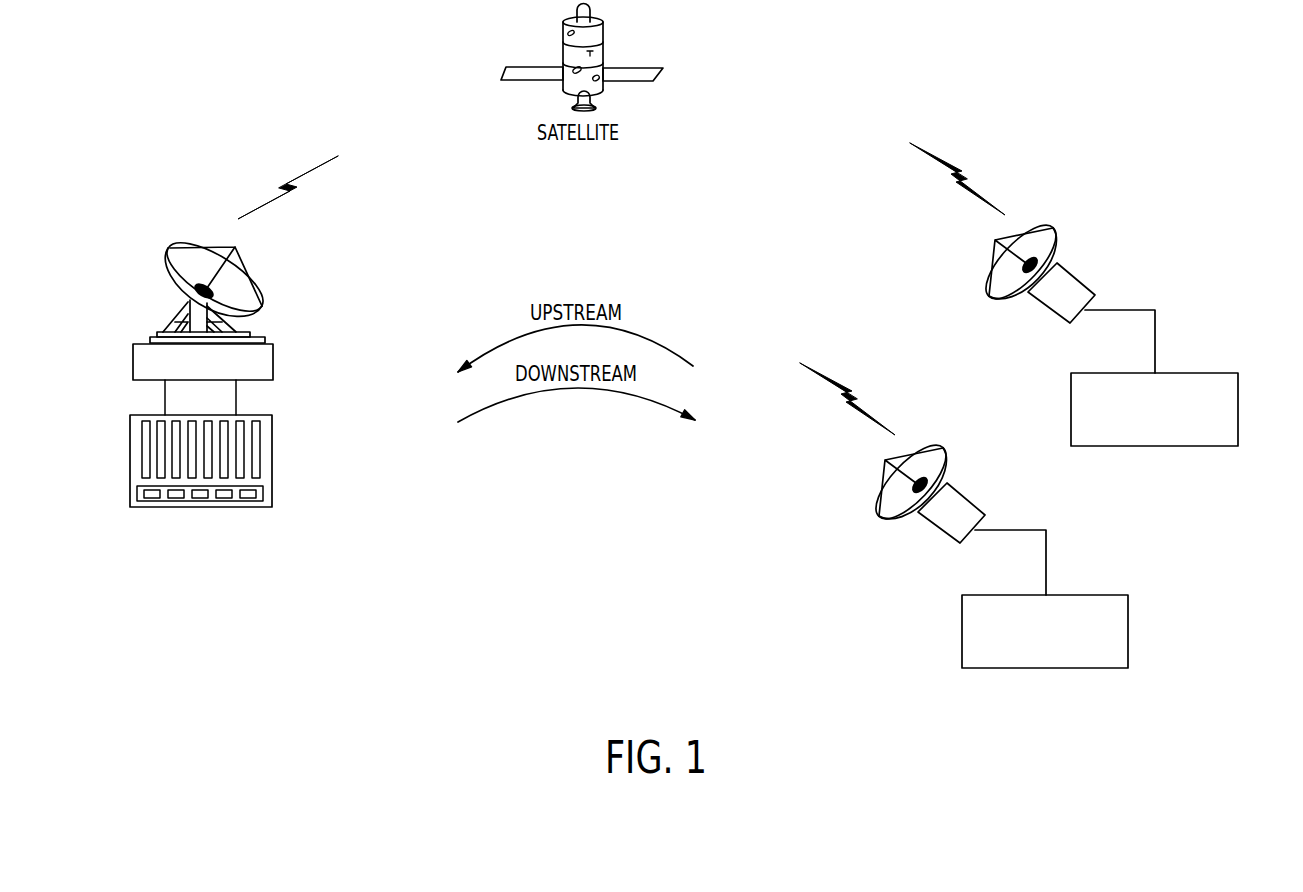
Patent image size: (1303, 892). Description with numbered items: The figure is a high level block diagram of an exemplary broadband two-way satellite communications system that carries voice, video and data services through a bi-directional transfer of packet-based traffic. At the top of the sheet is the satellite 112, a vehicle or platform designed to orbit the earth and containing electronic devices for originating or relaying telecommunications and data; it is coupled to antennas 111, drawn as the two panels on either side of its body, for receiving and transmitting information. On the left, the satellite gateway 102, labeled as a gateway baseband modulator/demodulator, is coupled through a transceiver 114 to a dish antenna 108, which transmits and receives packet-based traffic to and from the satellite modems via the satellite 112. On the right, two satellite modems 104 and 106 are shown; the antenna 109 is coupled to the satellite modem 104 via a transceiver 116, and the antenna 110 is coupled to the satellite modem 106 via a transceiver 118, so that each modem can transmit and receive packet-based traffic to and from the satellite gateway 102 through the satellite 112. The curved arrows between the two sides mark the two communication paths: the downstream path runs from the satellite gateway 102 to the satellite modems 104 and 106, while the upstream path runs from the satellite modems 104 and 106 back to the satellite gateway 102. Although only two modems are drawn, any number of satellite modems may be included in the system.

The satellite gateway 102 is at (268, 455).
The satellite modem 104 is at (1088, 594).
The satellite modem 106 is at (1198, 372).
The antenna 108 is at (211, 252).
The antenna 109 is at (902, 460).
The antenna 110 is at (1012, 240).
The antennas 111 is at (531, 72).
The satellite 112 is at (597, 30).
The transceiver 114 is at (263, 361).
The transceiver 116 is at (924, 518).
The transceiver 118 is at (1034, 298).